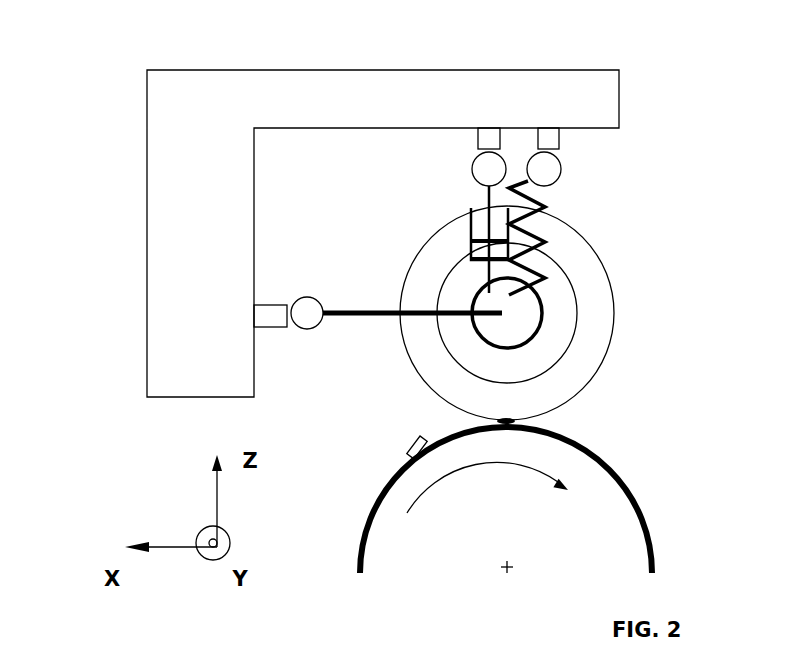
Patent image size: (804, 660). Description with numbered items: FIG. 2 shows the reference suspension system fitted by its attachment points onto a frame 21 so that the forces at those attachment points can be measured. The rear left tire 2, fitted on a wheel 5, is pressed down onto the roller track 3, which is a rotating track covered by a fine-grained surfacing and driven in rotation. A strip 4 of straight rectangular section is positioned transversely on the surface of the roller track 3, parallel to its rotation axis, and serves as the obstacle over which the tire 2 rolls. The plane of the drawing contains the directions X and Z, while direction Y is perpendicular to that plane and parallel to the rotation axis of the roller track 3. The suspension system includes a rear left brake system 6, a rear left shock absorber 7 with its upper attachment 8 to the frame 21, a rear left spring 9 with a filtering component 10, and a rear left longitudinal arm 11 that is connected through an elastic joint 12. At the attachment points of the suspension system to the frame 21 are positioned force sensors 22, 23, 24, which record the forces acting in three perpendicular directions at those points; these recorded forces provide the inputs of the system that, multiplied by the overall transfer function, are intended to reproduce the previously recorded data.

The rear left tire 2 is at (597, 347).
The roller track 3 is at (458, 538).
The strip 4 is at (407, 453).
The wheel 5 is at (538, 302).
The rear left brake system 6 is at (543, 343).
The rear left shock absorber 7 is at (488, 233).
The upper attachment of the rear left shock absorber 8 is at (480, 175).
The rear left spring 9 is at (535, 233).
The filtering component of the rear left spring 10 is at (548, 176).
The rear left longitudinal arm 11 is at (371, 317).
The elastic joint 12 is at (312, 330).
The frame 21 is at (185, 117).
The force sensor 22 is at (266, 313).
The force sensor 23 is at (491, 143).
The force sensor 24 is at (548, 143).